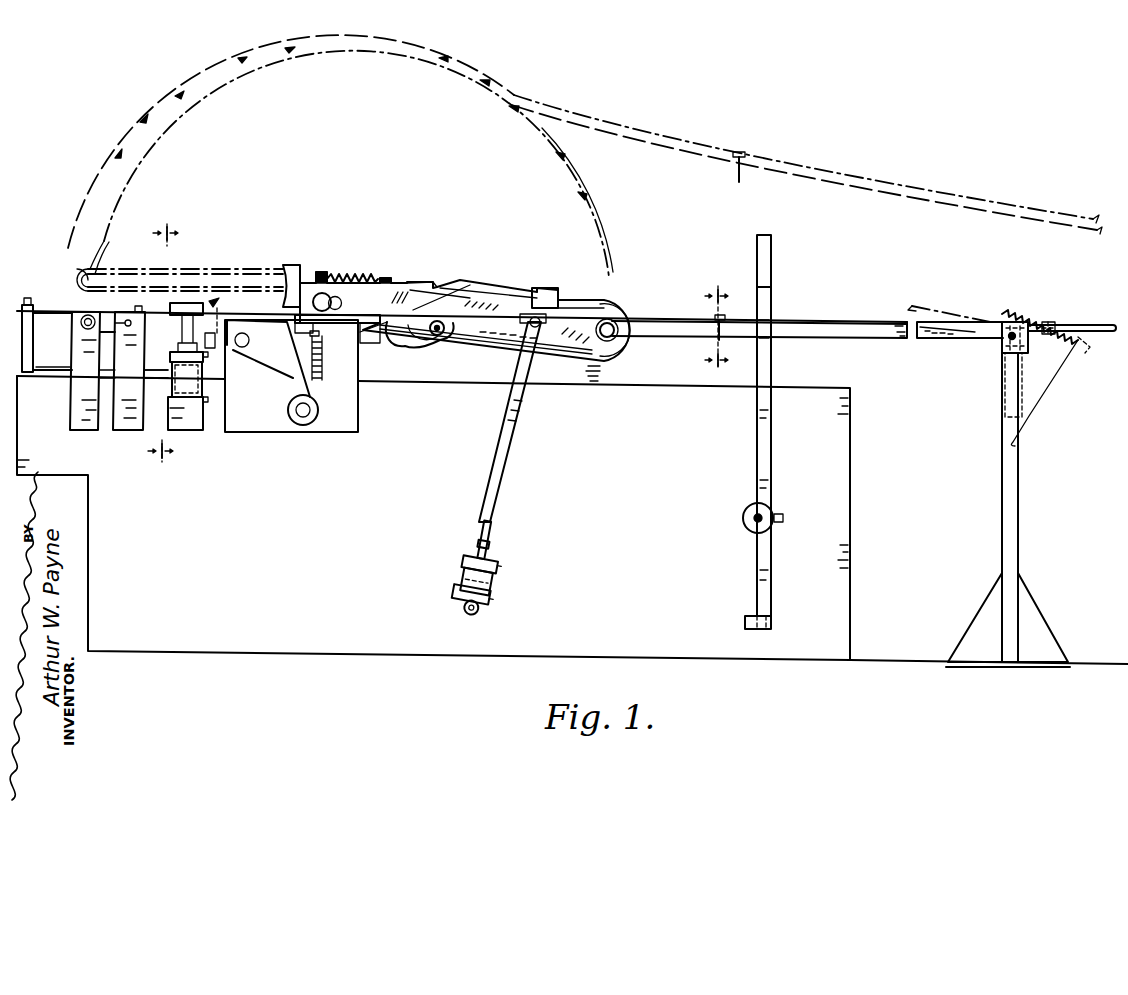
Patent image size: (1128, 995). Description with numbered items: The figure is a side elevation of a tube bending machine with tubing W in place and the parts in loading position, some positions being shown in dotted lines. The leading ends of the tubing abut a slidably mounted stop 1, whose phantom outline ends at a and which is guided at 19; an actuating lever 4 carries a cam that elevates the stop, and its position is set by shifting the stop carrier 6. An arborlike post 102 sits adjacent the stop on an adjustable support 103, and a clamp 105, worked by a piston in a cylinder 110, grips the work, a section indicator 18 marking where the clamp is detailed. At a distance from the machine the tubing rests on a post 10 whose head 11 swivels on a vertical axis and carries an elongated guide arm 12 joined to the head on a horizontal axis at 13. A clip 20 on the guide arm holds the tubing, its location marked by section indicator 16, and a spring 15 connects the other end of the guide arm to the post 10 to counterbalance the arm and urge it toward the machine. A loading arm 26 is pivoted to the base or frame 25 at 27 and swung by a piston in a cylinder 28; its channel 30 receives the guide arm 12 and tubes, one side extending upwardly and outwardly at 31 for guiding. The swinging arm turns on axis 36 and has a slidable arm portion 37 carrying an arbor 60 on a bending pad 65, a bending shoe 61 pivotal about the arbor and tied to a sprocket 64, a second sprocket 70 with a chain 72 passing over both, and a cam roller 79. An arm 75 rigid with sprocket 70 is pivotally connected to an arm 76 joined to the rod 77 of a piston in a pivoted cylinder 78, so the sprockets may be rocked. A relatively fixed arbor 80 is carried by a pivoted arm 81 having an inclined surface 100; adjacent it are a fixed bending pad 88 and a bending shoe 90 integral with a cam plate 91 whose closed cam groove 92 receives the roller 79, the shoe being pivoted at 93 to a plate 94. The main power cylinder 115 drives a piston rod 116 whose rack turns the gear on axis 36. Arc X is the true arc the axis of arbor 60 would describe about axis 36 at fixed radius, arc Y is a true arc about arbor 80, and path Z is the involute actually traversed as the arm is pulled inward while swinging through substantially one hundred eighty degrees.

The stop 1 is at (140, 306).
The actuating lever 4 is at (131, 326).
The stop carrier 6 is at (138, 431).
The post 10 is at (1019, 490).
The head 11 is at (1003, 351).
The guide arm 12 is at (867, 340).
The horizontal axis connection 13 is at (1013, 333).
The spring 15 is at (1052, 380).
The section line 16 is at (728, 328).
The section line 18 is at (180, 345).
The bracket 19 is at (130, 311).
The clip 20 is at (710, 326).
The base or frame 25 is at (270, 643).
The loading arm 26 is at (772, 446).
The pivot 27 is at (772, 621).
The cylinder 28 is at (772, 512).
The channel 30 is at (772, 311).
The channel side 31 is at (772, 252).
The axis 36 is at (354, 304).
The arm portion 37 is at (548, 347).
The arbor 60 is at (612, 361).
The bending shoe 61 is at (630, 318).
The sprocket 64 is at (628, 350).
The bending pad 65 is at (609, 318).
The sprocket 70 is at (421, 282).
The chain 72 is at (577, 293).
The arm 75 is at (462, 282).
The arm 76 is at (512, 432).
The piston rod 77 is at (495, 534).
The cylinder 78 is at (497, 580).
The cam roller 79 is at (447, 348).
The relatively fixed arbor 80 is at (321, 292).
The pivoted arm 81 is at (296, 388).
The fixed bending pad 88 is at (322, 320).
The bending shoe 90 is at (365, 323).
The cam plate 91 is at (395, 350).
The cam groove 92 is at (413, 343).
The pivotal connection 93 is at (341, 270).
The plate 94 is at (257, 380).
The inclined surface 100 is at (292, 277).
The arborlike post 102 is at (82, 316).
The support 103 is at (80, 400).
The clamp 105 is at (214, 305).
The cylinder 110 is at (196, 386).
The main power cylinder 115 is at (63, 337).
The piston rod 116 is at (216, 334).
The wire end a is at (78, 267).
The tubing work pieces W is at (604, 121).
The true arc X is at (163, 133).
The true arc Y is at (114, 143).
The involute path Z is at (183, 107).